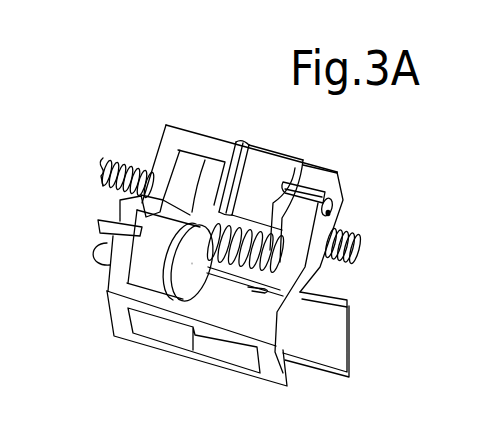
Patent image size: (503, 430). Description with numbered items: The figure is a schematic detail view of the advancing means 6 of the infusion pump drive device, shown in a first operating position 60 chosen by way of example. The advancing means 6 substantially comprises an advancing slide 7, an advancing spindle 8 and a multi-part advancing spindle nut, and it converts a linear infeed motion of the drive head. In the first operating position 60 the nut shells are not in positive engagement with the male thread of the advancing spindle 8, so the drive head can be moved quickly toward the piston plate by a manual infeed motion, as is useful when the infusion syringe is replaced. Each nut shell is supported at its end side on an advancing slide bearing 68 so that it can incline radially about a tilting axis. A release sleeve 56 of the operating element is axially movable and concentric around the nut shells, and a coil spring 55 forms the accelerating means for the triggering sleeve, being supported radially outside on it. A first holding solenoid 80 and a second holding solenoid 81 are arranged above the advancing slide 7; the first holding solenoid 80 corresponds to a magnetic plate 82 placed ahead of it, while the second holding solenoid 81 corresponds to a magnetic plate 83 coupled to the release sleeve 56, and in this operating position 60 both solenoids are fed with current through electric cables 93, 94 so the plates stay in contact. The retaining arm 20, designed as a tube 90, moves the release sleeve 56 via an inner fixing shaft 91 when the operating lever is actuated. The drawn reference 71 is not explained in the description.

The advancing means 6 is at (384, 272).
The advancing slide 7 is at (176, 126).
The advancing spindle 8 is at (106, 157).
The retaining arm 20 is at (319, 369).
The coil spring 55 is at (247, 267).
The release sleeve 56 is at (186, 175).
The first operating position 60 is at (393, 128).
The advancing slide bearing 68 is at (337, 215).
The base portion 71 is at (262, 426).
The first holding solenoid 80 is at (267, 160).
The second holding solenoid 81 is at (137, 273).
The magnetic plate 82 is at (238, 142).
The magnetic plate 83 is at (192, 277).
The tube 90 is at (340, 295).
The inner fixing shaft 91 is at (340, 335).
The electric cable 93 is at (327, 196).
The electric cable 94 is at (98, 222).